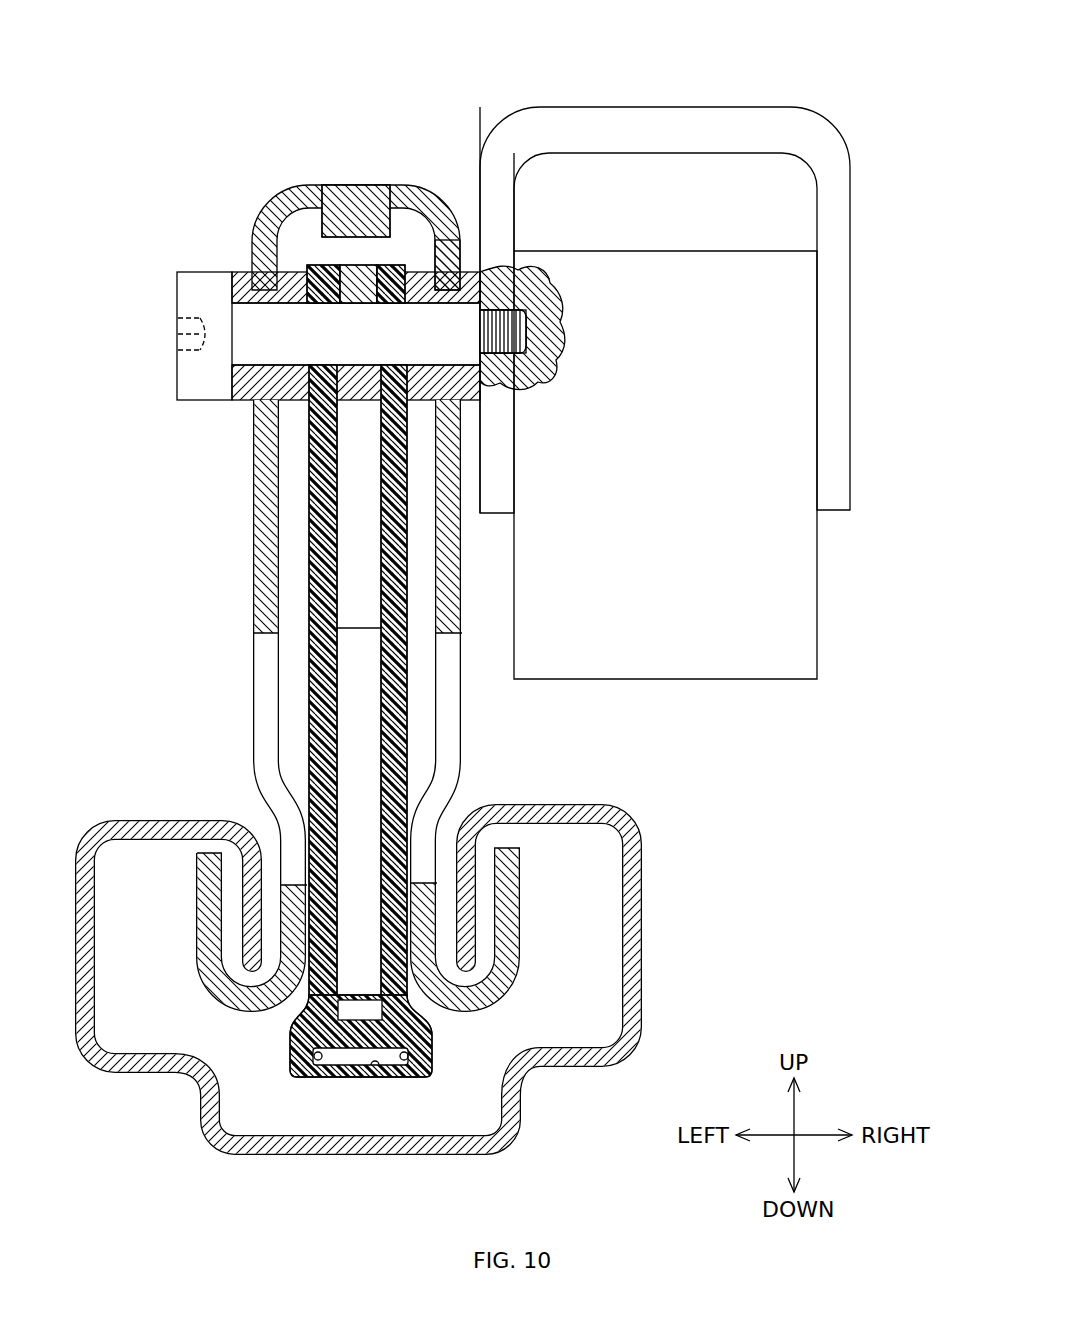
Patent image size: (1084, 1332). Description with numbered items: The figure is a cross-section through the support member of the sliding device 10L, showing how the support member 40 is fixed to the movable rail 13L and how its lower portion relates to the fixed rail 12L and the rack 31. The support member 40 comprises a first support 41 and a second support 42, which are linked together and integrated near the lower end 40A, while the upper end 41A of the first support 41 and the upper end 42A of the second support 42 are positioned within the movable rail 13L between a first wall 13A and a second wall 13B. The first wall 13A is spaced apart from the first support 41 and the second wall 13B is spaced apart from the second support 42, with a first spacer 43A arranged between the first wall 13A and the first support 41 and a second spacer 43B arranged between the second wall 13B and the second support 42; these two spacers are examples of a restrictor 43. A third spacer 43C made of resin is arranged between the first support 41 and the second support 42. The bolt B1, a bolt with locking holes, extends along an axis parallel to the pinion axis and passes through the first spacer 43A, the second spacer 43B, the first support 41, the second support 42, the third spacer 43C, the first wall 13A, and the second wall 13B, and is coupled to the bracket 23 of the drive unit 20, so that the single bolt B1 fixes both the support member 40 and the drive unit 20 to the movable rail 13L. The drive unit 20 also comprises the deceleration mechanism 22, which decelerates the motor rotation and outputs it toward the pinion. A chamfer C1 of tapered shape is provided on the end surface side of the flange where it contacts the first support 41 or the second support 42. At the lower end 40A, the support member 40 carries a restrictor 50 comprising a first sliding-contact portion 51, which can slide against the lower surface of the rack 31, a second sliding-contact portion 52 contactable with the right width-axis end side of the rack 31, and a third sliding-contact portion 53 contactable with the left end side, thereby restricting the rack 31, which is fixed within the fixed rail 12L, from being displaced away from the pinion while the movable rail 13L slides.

The sliding device 10L is at (156, 565).
The fixed rail 12L is at (644, 897).
The movable rail 13L is at (252, 568).
The first wall 13A is at (463, 275).
The second wall 13B is at (252, 243).
The drive unit 20 is at (695, 399).
The deceleration mechanism 22 is at (788, 597).
The bracket 23 is at (663, 107).
The rack 31 is at (338, 1058).
The support member 40 is at (330, 192).
The lower end 40A is at (371, 1111).
The first support 41 is at (403, 722).
The upper end 41A is at (403, 265).
The second support 42 is at (322, 715).
The upper end 42A is at (330, 267).
The restrictor 43 is at (330, 234).
The first spacer 43A is at (447, 275).
The second spacer 43B is at (265, 253).
The third spacer 43C is at (367, 232).
The restrictor 50 is at (360, 1080).
The first sliding-contact portion 51 is at (377, 1066).
The second sliding-contact portion 52 is at (417, 1048).
The third sliding-contact portion 53 is at (310, 1048).
The bolt B1 is at (270, 345).
The chamfer C1 is at (307, 402).